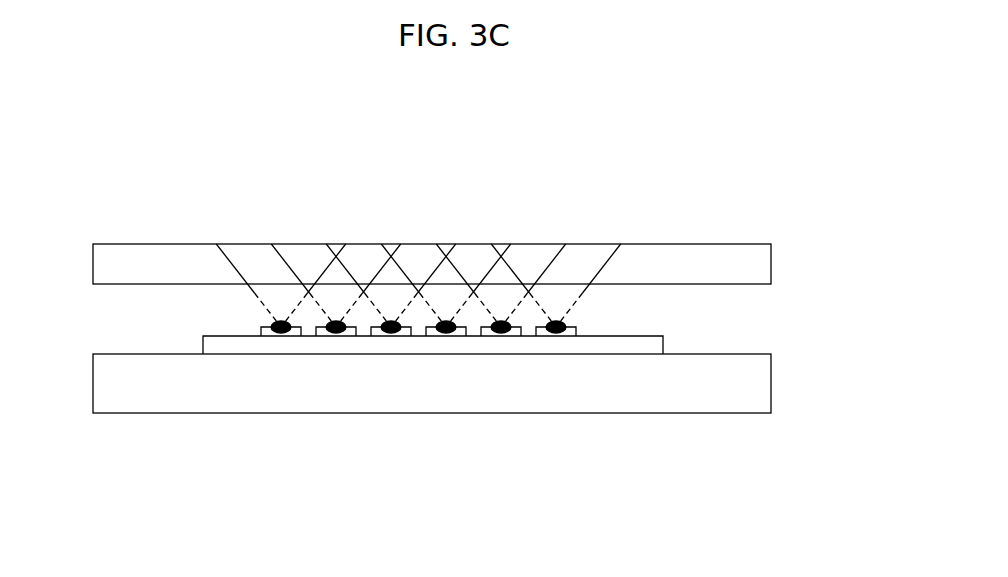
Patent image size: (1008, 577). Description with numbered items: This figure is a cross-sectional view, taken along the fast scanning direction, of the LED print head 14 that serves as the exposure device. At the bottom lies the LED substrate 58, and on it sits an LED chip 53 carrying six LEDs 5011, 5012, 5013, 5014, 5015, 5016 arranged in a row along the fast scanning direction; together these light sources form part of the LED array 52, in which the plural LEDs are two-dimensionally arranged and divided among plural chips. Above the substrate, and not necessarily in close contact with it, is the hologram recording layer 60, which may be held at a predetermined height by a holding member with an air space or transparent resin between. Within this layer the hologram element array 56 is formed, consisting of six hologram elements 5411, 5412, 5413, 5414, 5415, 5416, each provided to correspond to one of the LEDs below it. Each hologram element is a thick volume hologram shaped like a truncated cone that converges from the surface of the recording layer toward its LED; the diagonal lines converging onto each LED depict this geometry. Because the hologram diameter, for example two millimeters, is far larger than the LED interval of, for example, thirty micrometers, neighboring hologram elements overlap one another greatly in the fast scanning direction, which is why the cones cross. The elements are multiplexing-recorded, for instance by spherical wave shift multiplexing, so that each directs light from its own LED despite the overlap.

The LED print head 14 is at (759, 227).
The hologram recording layer 60 is at (759, 263).
The LED substrate 58 is at (759, 384).
The LED chip 53 is at (651, 347).
The hologram element array 56 is at (607, 177).
The LED array 52 is at (597, 463).
The hologram element 5411 is at (250, 257).
The hologram element 5412 is at (316, 257).
The hologram element 5413 is at (363, 257).
The hologram element 5414 is at (470, 257).
The hologram element 5415 is at (540, 257).
The hologram element 5416 is at (597, 257).
The LED 5011 is at (278, 336).
The LED 5012 is at (333, 336).
The LED 5013 is at (388, 336).
The LED 5014 is at (443, 336).
The LED 5015 is at (498, 336).
The LED 5016 is at (553, 336).